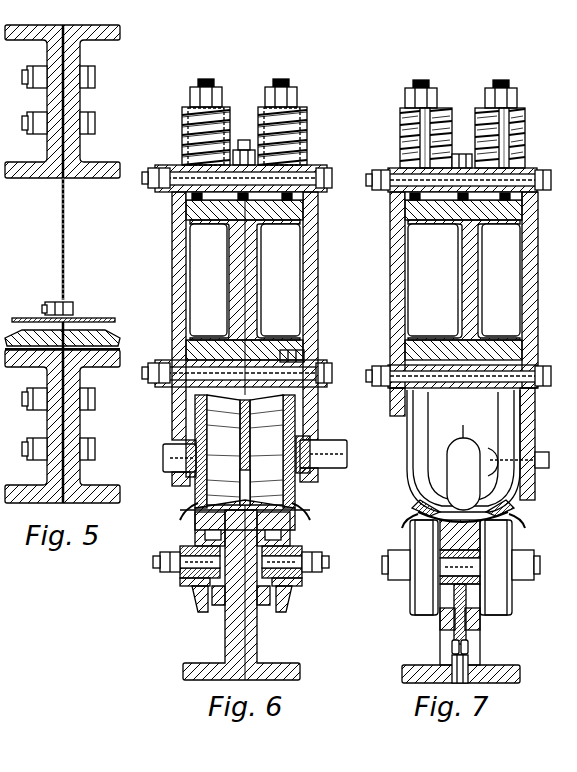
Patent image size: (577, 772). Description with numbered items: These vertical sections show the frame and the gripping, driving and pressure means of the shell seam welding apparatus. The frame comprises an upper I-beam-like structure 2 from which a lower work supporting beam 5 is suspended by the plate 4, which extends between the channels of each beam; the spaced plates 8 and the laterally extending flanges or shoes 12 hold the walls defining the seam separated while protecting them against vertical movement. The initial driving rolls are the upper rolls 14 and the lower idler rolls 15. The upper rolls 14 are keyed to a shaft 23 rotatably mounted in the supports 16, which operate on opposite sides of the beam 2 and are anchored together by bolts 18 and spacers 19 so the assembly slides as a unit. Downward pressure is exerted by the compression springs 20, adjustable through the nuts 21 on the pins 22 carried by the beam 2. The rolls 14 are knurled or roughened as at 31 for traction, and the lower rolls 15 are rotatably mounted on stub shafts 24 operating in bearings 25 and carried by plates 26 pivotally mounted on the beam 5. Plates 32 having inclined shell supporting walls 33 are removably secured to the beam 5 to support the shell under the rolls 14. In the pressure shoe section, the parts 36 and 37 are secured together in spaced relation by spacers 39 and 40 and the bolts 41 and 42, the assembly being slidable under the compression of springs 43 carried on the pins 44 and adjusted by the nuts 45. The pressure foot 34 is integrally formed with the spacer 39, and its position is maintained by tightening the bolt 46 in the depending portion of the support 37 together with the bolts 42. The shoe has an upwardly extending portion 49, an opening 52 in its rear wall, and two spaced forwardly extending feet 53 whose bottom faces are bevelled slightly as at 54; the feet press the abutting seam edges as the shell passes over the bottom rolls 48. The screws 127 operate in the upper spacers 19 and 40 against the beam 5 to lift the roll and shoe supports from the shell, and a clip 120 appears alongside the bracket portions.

In FIG. 5, the I-beam-like structure 2 is at (72, 106).
In FIG. 6, the I-beam-like structure 2 is at (250, 243).
In FIG. 7, the I-beam-like structure 2 is at (470, 250).
In FIG. 5, the plate 4 is at (66, 244).
In FIG. 6, the plate 4 is at (250, 395).
In FIG. 5, the lower work supporting beam 5 is at (72, 433).
In FIG. 6, the lower work supporting beam 5 is at (252, 632).
In FIG. 7, the lower work supporting beam 5 is at (436, 665).
In FIG. 5, the spaced plates 8 is at (102, 336).
In FIG. 5, the laterally extending flanges or shoes 12 is at (78, 318).
In FIG. 6, the upper rolls 14 is at (200, 418).
In FIG. 6, the lower rolls 15 is at (196, 598).
In FIG. 6, the supports 16 is at (318, 252).
In FIG. 6, the bolts 18 is at (308, 175).
In FIG. 6, the spacers 19 is at (238, 148).
In FIG. 6, the compression springs 20 is at (228, 108).
In FIG. 6, the nuts 21 is at (222, 100).
In FIG. 6, the pins 22 is at (205, 80).
In FIG. 6, the shaft 23 is at (322, 470).
In FIG. 6, the stub shafts 24 is at (185, 572).
In FIG. 6, the bearings 25 is at (190, 583).
In FIG. 6, the plates 26 is at (220, 605).
In FIG. 6, the knurled or roughened surface 31 is at (200, 495).
In FIG. 6, the plates 32 is at (290, 525).
In FIG. 6, the inclined shell supporting walls 33 is at (198, 536).
In FIG. 7, the pressure foot 34 is at (432, 428).
In FIG. 7, the support part 36 is at (392, 278).
In FIG. 7, the support part 37 is at (537, 308).
In FIG. 7, the spacer 39 is at (472, 404).
In FIG. 7, the spacer 40 is at (461, 154).
In FIG. 7, the bolts 41 is at (518, 180).
In FIG. 7, the bolts 42 is at (535, 398).
In FIG. 7, the springs 43 is at (520, 130).
In FIG. 7, the pins 44 is at (432, 82).
In FIG. 7, the nuts 45 is at (510, 98).
In FIG. 7, the bolt 46 is at (550, 460).
In FIG. 7, the bottom rolls 48 is at (418, 608).
In FIG. 7, the upwardly extending portion 49 is at (463, 474).
In FIG. 7, the opening 52 is at (464, 483).
In FIG. 7, the feet 53 is at (425, 508).
In FIG. 7, the bevelled bottom faces 54 is at (418, 513).
In FIG. 6, the spring clip 120 is at (310, 515).
In FIG. 7, the spring clip 120 is at (516, 528).
In FIG. 6, the screws 127 is at (300, 126).
In FIG. 7, the screws 127 is at (412, 152).